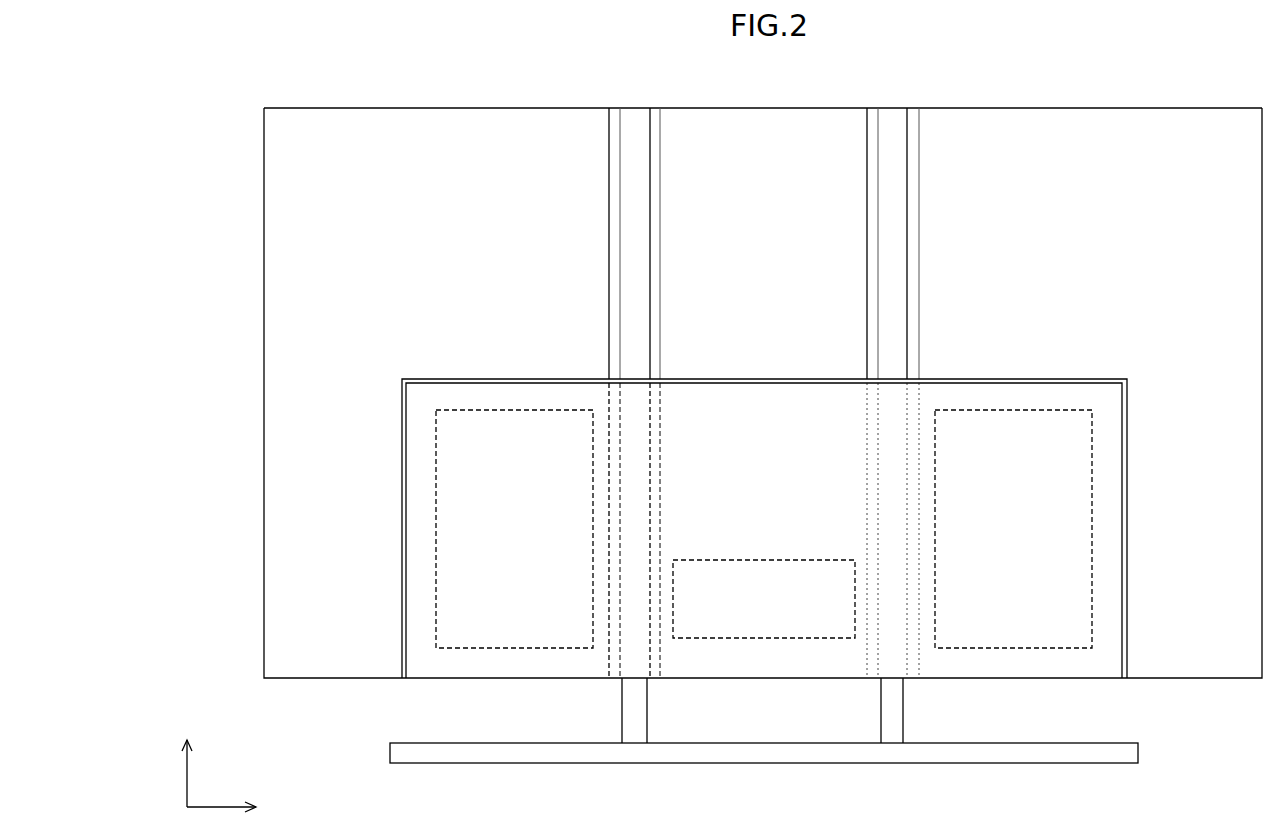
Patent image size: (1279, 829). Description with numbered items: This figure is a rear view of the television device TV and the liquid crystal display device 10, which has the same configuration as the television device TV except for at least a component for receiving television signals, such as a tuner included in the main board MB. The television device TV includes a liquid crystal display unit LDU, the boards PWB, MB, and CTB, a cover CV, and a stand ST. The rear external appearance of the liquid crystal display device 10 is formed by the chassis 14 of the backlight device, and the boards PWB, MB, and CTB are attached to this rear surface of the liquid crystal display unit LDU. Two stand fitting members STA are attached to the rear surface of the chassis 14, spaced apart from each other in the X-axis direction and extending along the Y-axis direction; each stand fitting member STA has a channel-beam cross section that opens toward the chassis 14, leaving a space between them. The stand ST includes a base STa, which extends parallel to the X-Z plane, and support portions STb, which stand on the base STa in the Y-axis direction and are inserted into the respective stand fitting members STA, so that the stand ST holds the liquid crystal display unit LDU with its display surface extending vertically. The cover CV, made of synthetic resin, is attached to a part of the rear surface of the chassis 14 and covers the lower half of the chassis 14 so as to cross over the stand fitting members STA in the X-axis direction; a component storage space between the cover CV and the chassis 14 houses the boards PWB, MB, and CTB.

The television device TV is at (1045, 80).
The liquid crystal display device 10 is at (1135, 97).
The liquid crystal display unit LDU is at (343, 108).
The chassis 14 is at (458, 138).
The stand fitting member STA is at (634, 135).
The cover CV is at (1105, 542).
The board PWB is at (496, 648).
The board CTB is at (737, 638).
The main board MB is at (1041, 648).
The stand ST is at (390, 757).
The base STa is at (1066, 752).
The support portion STb is at (632, 709).